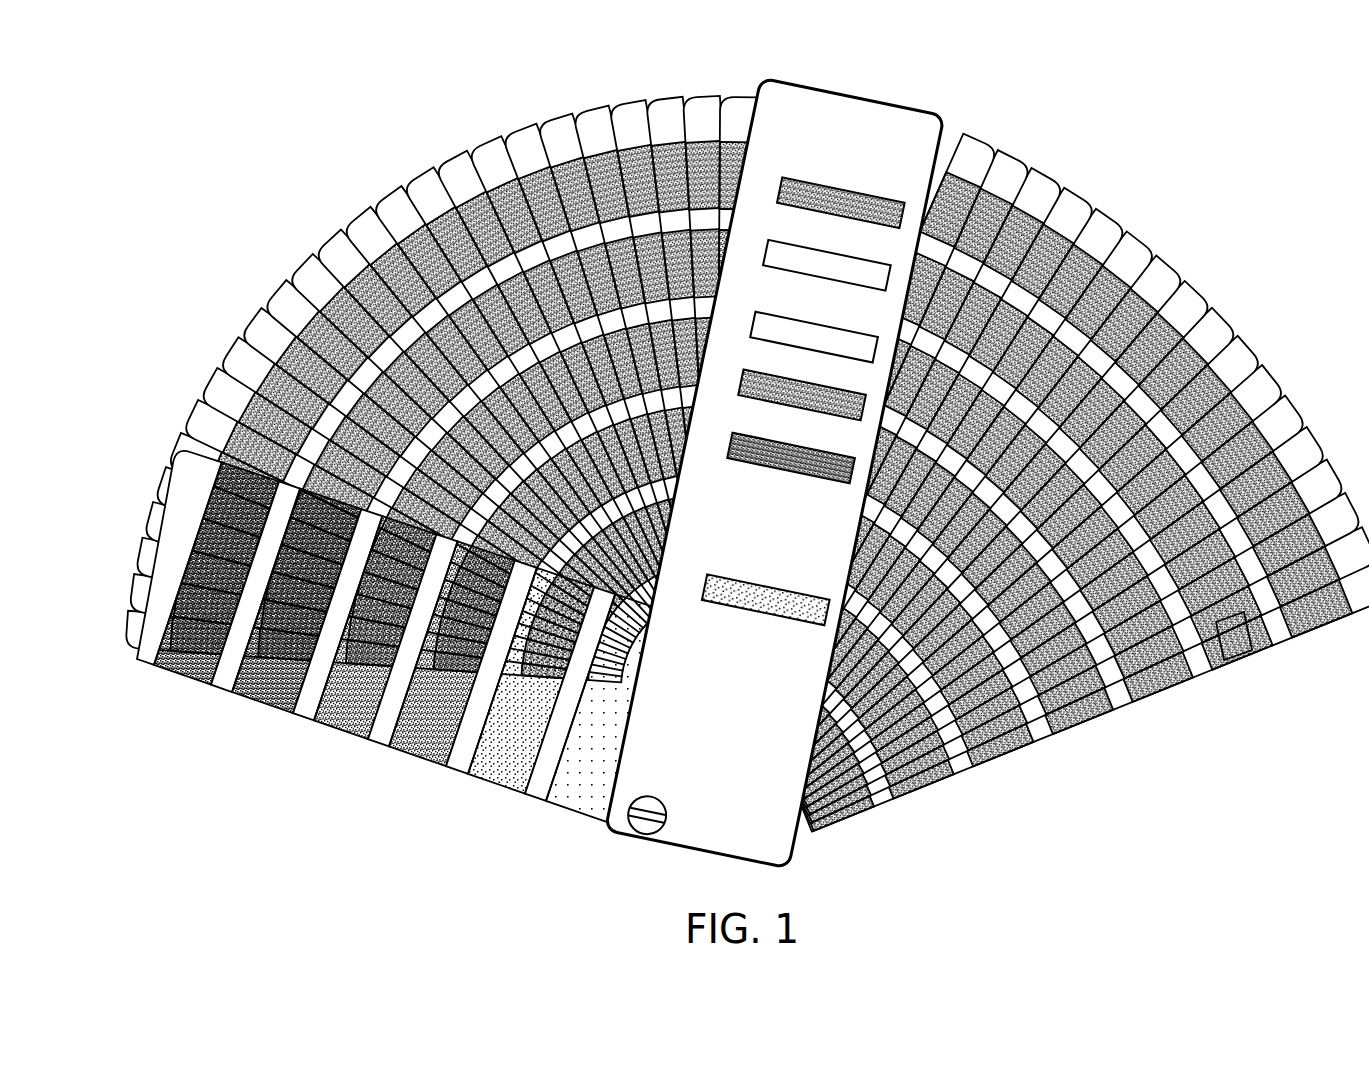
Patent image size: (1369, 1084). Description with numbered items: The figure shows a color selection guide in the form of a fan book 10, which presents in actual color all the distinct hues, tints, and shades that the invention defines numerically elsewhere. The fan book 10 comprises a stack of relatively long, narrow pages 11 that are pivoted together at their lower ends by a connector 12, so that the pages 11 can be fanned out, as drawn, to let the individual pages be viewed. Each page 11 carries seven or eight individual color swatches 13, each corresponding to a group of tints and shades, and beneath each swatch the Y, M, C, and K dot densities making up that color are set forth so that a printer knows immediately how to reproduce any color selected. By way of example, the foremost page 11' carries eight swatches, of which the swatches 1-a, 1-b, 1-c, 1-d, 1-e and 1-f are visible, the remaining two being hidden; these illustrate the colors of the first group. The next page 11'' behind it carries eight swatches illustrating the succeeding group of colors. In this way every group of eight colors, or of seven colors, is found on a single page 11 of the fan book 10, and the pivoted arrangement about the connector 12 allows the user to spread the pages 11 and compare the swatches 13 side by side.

The fan book 10 is at (320, 208).
The pages 11 is at (1039, 483).
The page 11' is at (141, 589).
The next page 11'' is at (467, 389).
The connector 12 is at (640, 826).
The color swatches 13 is at (1290, 632).
The swatch 1-a is at (184, 675).
The swatch 1-b is at (254, 690).
The swatch 1-c is at (339, 716).
The swatch 1-d is at (411, 741).
The swatch 1-e is at (489, 771).
The swatch 1-f is at (564, 798).